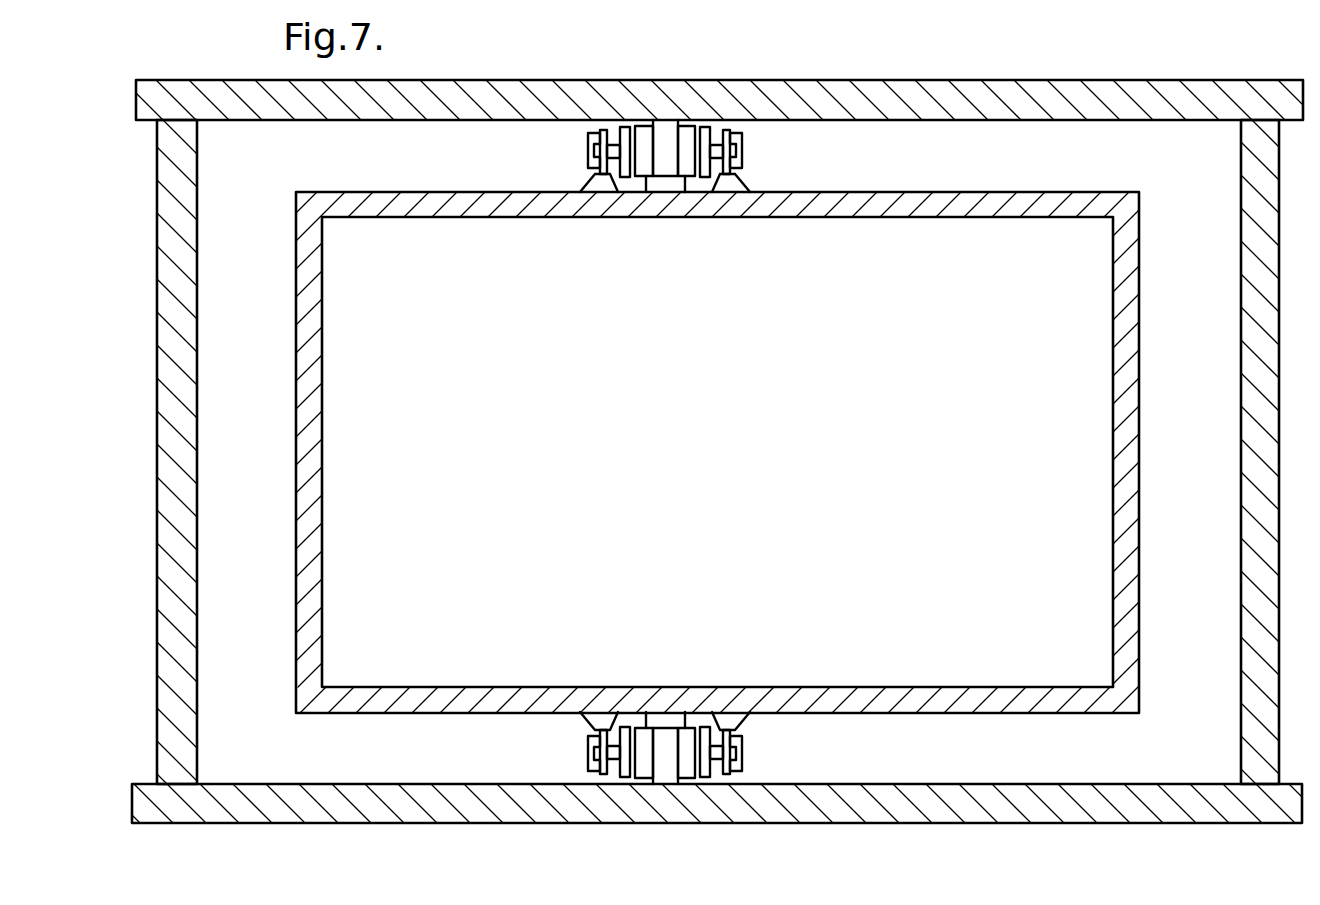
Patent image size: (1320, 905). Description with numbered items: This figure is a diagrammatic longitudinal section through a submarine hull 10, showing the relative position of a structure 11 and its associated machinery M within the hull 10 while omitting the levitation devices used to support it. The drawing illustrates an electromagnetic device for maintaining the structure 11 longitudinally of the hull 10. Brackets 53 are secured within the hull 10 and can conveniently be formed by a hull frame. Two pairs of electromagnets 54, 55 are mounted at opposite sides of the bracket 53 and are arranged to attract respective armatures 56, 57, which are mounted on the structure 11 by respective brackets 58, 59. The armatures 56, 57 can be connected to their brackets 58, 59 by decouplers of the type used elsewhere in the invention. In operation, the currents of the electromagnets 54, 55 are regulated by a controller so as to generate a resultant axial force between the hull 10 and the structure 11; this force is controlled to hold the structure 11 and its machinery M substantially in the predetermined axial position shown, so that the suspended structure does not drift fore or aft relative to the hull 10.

The hull 10 is at (465, 90).
The structure 11 is at (463, 203).
The machinery M is at (680, 438).
The bracket 53 is at (667, 126).
The electromagnet 54 is at (685, 178).
The electromagnet 55 is at (686, 726).
The armature 56 is at (627, 120).
The armature 57 is at (623, 785).
The bracket 58 is at (604, 176).
The bracket 59 is at (599, 720).